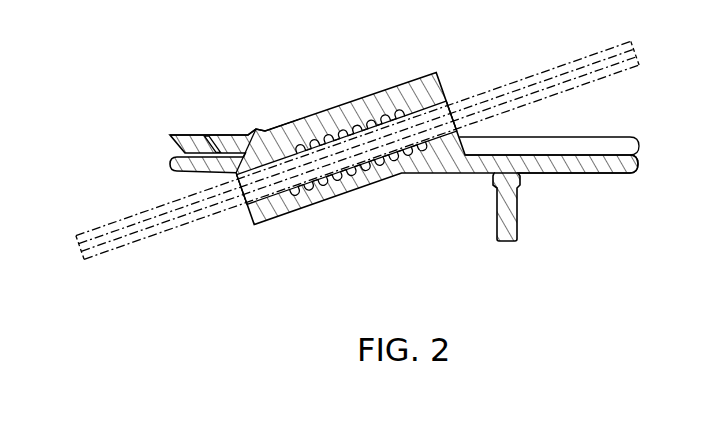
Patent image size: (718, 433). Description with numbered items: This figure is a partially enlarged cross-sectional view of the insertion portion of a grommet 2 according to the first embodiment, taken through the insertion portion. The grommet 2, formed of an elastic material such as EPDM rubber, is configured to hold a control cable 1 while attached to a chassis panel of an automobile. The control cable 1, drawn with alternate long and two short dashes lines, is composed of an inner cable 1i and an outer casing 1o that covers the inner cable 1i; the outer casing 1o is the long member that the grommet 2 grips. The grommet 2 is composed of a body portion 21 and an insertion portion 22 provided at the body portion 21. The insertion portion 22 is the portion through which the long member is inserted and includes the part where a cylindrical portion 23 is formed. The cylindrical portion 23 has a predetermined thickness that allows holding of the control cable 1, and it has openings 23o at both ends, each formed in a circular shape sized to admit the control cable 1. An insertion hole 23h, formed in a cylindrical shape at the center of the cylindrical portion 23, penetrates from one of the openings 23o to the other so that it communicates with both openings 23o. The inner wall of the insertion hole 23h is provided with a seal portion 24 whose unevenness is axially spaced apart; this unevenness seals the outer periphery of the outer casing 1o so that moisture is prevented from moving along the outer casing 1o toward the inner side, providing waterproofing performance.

The control cable 1 is at (348, 150).
The outer casing 1o is at (146, 203).
The inner cable 1i is at (92, 221).
The grommet 2 is at (681, 76).
The body portion 21 is at (627, 131).
The insertion portion 22 is at (291, 95).
The cylindrical portion 23 is at (377, 96).
The openings 23o is at (464, 109).
The insertion hole 23h is at (418, 152).
The seal portion 24 is at (304, 185).